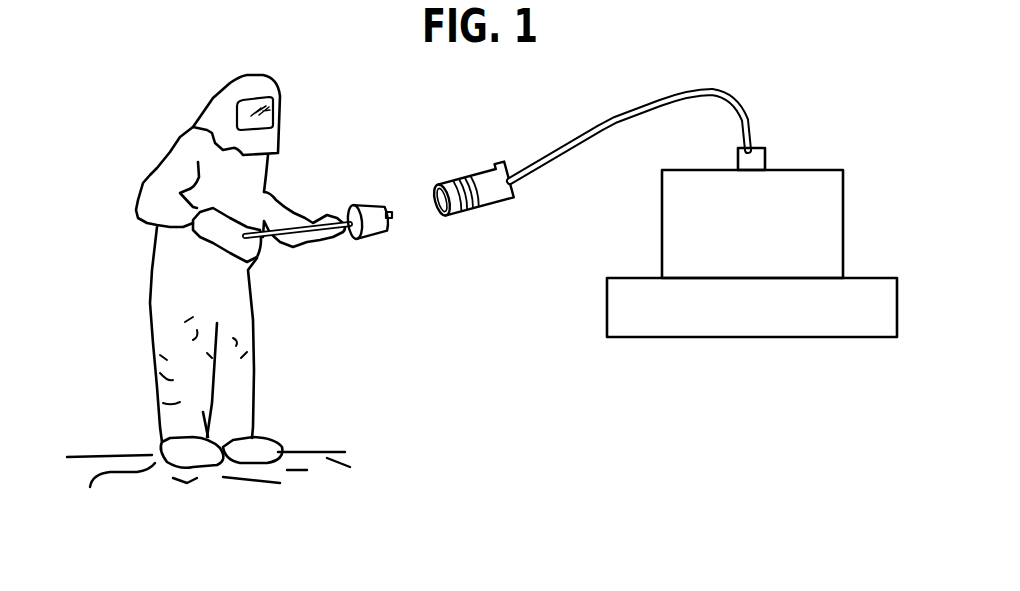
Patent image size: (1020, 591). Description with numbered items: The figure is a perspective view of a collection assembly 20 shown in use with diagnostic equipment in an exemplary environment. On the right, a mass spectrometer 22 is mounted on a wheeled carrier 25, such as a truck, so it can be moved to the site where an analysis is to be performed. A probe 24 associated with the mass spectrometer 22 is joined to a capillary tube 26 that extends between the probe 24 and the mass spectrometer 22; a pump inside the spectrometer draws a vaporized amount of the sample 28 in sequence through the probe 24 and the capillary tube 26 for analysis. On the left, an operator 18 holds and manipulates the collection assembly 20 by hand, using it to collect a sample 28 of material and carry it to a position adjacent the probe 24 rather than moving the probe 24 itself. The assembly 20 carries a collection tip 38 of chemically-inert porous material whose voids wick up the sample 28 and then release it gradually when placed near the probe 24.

The operator 18 is at (152, 261).
The collection assembly 20 is at (332, 257).
The mass spectrometer 22 is at (828, 170).
The probe 24 is at (458, 213).
The wheeled carrier 25 is at (607, 315).
The capillary tube 26 is at (632, 108).
The sample 28 is at (391, 214).
The collection tip 38 is at (392, 222).